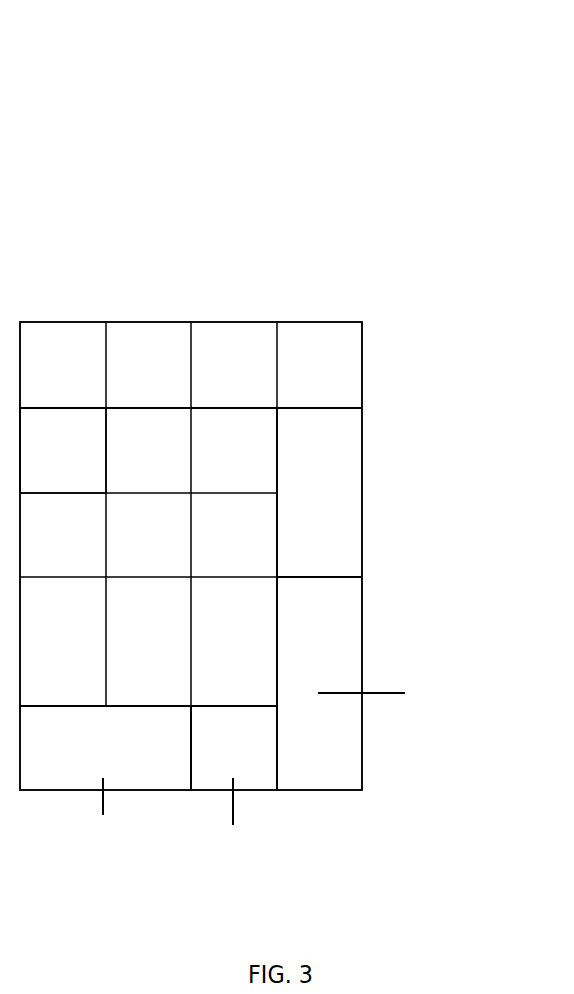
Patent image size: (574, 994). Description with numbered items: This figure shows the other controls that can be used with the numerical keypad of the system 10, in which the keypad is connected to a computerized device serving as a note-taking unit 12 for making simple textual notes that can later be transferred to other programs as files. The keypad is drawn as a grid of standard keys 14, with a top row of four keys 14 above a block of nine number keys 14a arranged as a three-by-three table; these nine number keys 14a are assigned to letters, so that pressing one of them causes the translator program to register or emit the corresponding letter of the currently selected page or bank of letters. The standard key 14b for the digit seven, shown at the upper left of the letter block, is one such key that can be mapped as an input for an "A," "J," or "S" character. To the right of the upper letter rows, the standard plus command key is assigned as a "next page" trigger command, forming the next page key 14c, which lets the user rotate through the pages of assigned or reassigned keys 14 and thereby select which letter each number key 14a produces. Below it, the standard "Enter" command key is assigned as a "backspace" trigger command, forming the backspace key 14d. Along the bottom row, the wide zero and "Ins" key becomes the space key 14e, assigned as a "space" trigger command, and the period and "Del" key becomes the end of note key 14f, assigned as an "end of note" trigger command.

The system 10 is at (380, 243).
The note-taking unit 12 is at (471, 140).
The standard key 14 is at (77, 379).
The number keys 14a is at (86, 447).
The standard key for the digit "7" 14b is at (83, 478).
The next page key 14c is at (340, 470).
The backspace key 14d is at (342, 640).
The space key 14e is at (129, 760).
The end of note key 14f is at (255, 760).